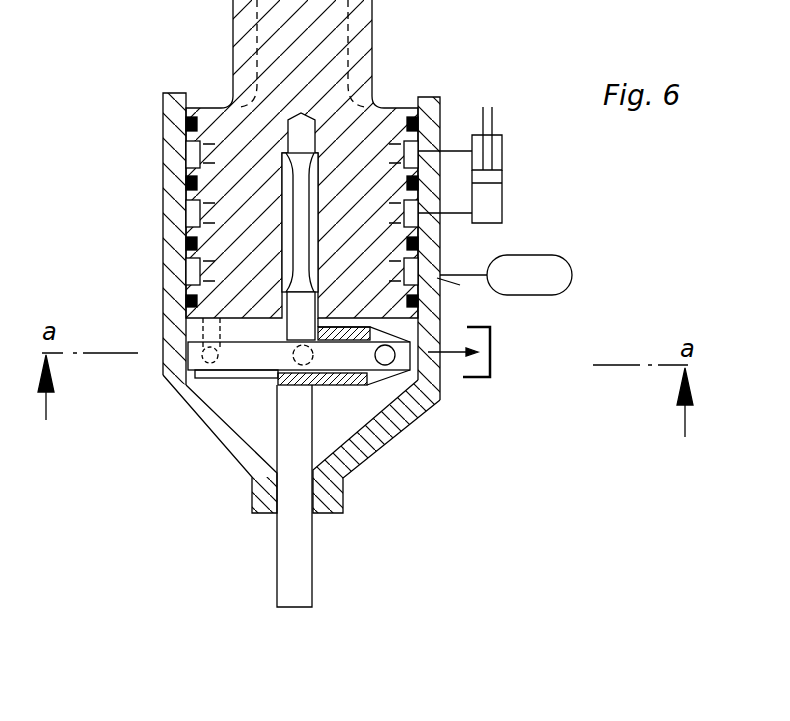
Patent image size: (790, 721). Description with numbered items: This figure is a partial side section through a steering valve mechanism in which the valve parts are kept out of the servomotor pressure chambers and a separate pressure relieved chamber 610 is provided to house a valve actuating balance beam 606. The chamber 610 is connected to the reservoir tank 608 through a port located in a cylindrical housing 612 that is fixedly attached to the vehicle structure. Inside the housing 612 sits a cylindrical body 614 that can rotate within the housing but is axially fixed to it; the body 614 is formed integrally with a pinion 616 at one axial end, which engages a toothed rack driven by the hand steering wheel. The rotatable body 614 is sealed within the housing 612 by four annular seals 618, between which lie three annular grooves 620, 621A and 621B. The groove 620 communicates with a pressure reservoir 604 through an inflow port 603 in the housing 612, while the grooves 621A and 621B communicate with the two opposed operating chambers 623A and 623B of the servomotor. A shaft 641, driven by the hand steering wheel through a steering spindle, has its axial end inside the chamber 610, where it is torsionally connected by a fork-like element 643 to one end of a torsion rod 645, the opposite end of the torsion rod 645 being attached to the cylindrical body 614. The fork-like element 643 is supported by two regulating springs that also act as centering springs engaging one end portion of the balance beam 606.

The inflow port 603 is at (437, 278).
The pressure reservoir 604 is at (555, 273).
The valve actuating balance beam 606 is at (185, 360).
The reservoir tank 608 is at (483, 367).
The pressure relieved chamber 610 is at (240, 405).
The cylindrical housing 612 is at (173, 115).
The cylindrical body 614 is at (247, 138).
The pinion 616 is at (357, 55).
The annular seals 618 is at (190, 308).
The annular groove 620 is at (192, 273).
The annular groove 621A is at (197, 213).
The annular groove 621B is at (197, 157).
The operating chamber 623A is at (495, 200).
The operating chamber 623B is at (495, 148).
The shaft 641 is at (290, 533).
The fork-like element 643 is at (347, 388).
The torsion rod 645 is at (302, 198).